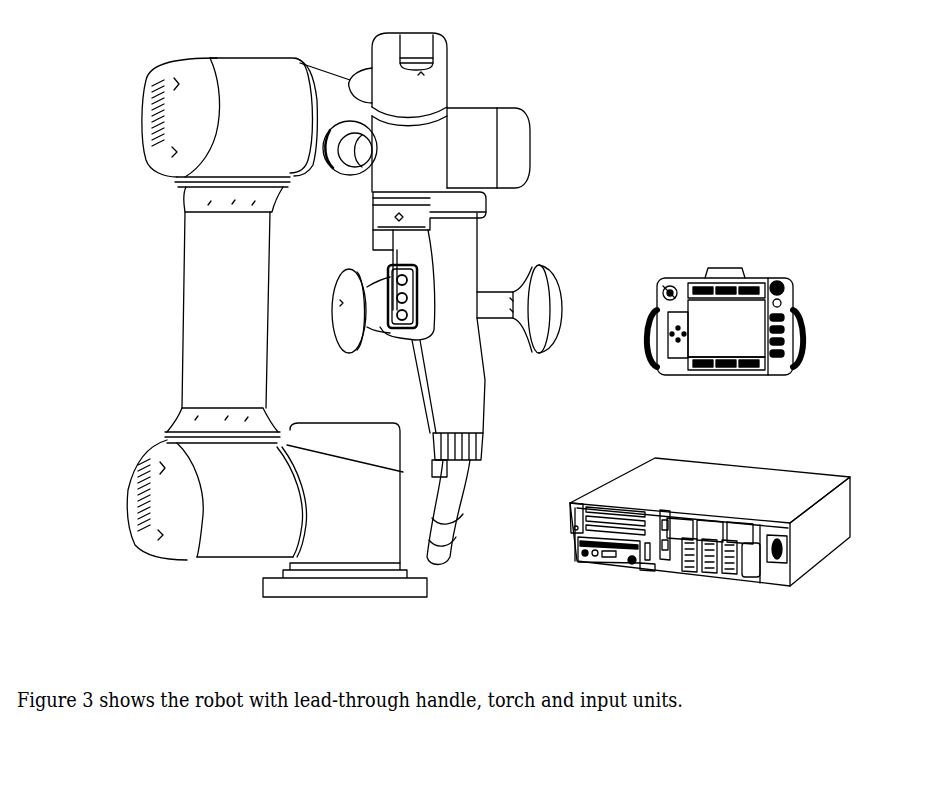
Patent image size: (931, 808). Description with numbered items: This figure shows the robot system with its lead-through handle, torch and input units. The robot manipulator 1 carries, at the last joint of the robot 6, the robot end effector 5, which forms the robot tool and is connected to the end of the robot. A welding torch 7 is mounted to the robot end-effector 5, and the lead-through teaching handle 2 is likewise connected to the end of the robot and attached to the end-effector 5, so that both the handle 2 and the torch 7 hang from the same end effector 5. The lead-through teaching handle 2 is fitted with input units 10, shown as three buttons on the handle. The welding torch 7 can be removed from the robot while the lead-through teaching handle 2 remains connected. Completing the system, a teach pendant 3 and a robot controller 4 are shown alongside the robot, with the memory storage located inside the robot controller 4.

The robot manipulator 1 is at (165, 243).
The lead-through teaching handle 2 is at (555, 255).
The teach pendant 3 is at (662, 272).
The robot controller 4 is at (757, 463).
The robot end effector 5 is at (400, 353).
The last joint of the robot 6 is at (368, 217).
The welding torch 7 is at (487, 467).
The input units 10 is at (396, 312).